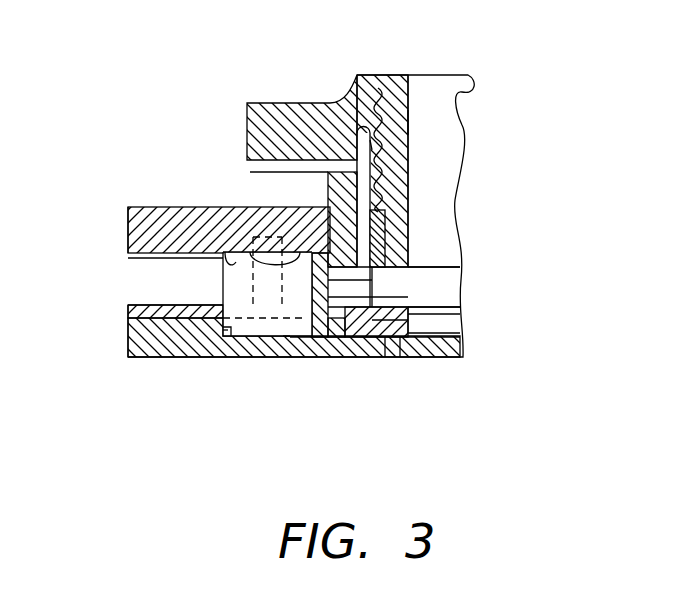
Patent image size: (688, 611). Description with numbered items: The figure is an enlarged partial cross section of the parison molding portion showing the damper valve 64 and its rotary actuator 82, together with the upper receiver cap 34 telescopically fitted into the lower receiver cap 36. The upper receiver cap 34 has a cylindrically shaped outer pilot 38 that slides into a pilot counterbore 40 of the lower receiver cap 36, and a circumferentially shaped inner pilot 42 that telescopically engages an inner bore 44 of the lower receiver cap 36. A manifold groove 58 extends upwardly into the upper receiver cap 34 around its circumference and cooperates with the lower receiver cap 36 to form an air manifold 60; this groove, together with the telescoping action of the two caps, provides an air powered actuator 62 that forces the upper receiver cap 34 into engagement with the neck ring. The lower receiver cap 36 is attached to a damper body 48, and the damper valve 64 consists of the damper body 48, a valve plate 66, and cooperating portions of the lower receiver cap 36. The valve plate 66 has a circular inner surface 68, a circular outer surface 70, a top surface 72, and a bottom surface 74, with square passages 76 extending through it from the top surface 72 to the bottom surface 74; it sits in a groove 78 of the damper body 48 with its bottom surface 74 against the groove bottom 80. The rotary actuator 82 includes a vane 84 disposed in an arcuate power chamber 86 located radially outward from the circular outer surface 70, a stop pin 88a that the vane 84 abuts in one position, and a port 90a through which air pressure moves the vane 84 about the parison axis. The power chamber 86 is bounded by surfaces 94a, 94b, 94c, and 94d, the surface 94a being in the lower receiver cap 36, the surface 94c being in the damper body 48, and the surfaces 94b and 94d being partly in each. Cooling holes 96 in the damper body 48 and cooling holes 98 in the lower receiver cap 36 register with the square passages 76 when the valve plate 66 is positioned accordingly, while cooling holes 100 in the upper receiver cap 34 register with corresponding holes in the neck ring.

The upper receiver cap 34 is at (460, 90).
The lower receiver cap 36 is at (137, 207).
The outer pilot 38 is at (258, 172).
The pilot counterbore 40 is at (330, 190).
The inner pilot 42 is at (408, 178).
The inner bore 44 is at (398, 228).
The damper body 48 is at (128, 333).
The manifold groove 58 is at (372, 148).
The air manifold 60 is at (373, 148).
The air powered actuator 62 is at (515, 212).
The damper valve 64 is at (167, 87).
The valve plate 66 is at (458, 330).
The circular inner surface 68 is at (392, 350).
The circular outer surface 70 is at (300, 340).
The top surface 72 is at (340, 292).
The bottom surface 74 is at (390, 355).
The square passages 76 is at (455, 318).
The groove 78 is at (377, 347).
The groove bottom 80 is at (352, 342).
The rotary actuator 82 is at (123, 95).
The vane 84 is at (223, 252).
The arcuate power chamber 86 is at (263, 330).
The stop pin 88a is at (240, 336).
The port 90a is at (172, 270).
The surface 94a is at (252, 253).
The surface 94b is at (286, 336).
The surface 94c is at (225, 328).
The surface 94d is at (223, 300).
The cooling holes 96 is at (335, 340).
The cooling holes 98 is at (338, 305).
The cooling holes 100 is at (408, 124).